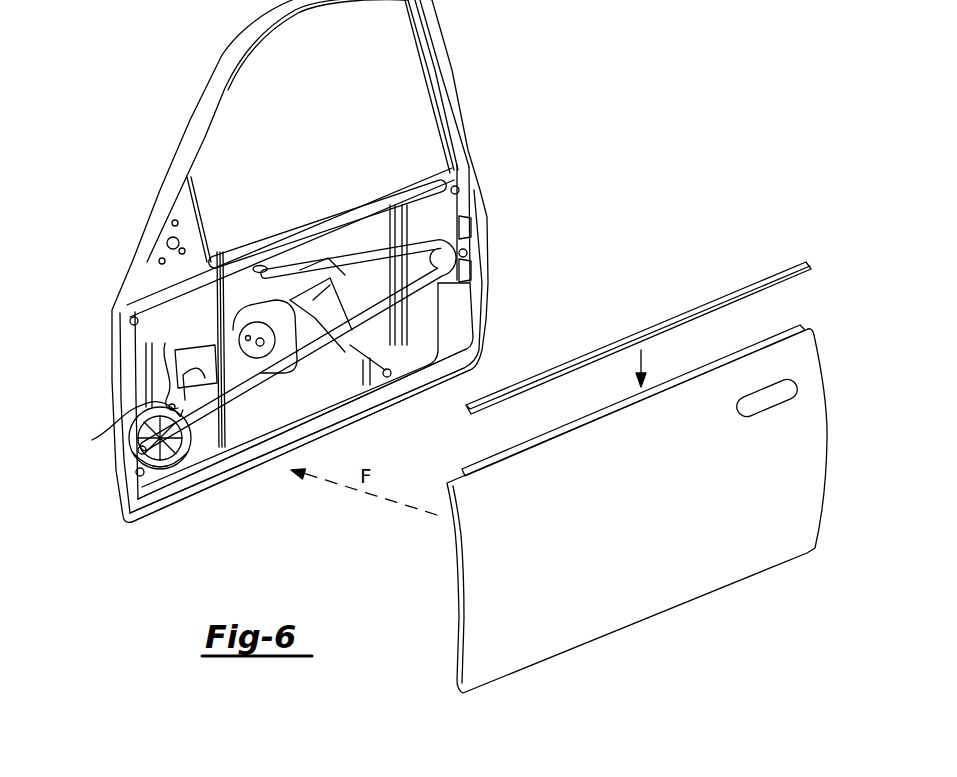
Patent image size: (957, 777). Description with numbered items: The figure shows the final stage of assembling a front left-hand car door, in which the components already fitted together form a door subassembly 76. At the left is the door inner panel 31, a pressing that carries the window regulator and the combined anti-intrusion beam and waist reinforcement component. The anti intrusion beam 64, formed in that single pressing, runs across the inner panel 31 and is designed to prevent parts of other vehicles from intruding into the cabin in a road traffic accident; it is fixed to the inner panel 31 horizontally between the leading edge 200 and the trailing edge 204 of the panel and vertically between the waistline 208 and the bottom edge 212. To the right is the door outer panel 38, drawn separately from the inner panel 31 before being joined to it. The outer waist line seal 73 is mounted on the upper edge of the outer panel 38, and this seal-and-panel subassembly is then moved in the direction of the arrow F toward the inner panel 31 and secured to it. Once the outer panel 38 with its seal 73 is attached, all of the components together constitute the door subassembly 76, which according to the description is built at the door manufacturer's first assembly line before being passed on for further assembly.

The door inner panel 31 is at (444, 44).
The door subassembly 76 is at (468, 110).
The trailing edge 204 is at (484, 232).
The leading edge 200 is at (112, 338).
The waistline 208 is at (266, 228).
The anti intrusion beam 64 is at (357, 324).
The bottom edge 212 is at (372, 414).
The outer waist line seal 73 is at (681, 316).
The door outer panel 38 is at (664, 613).